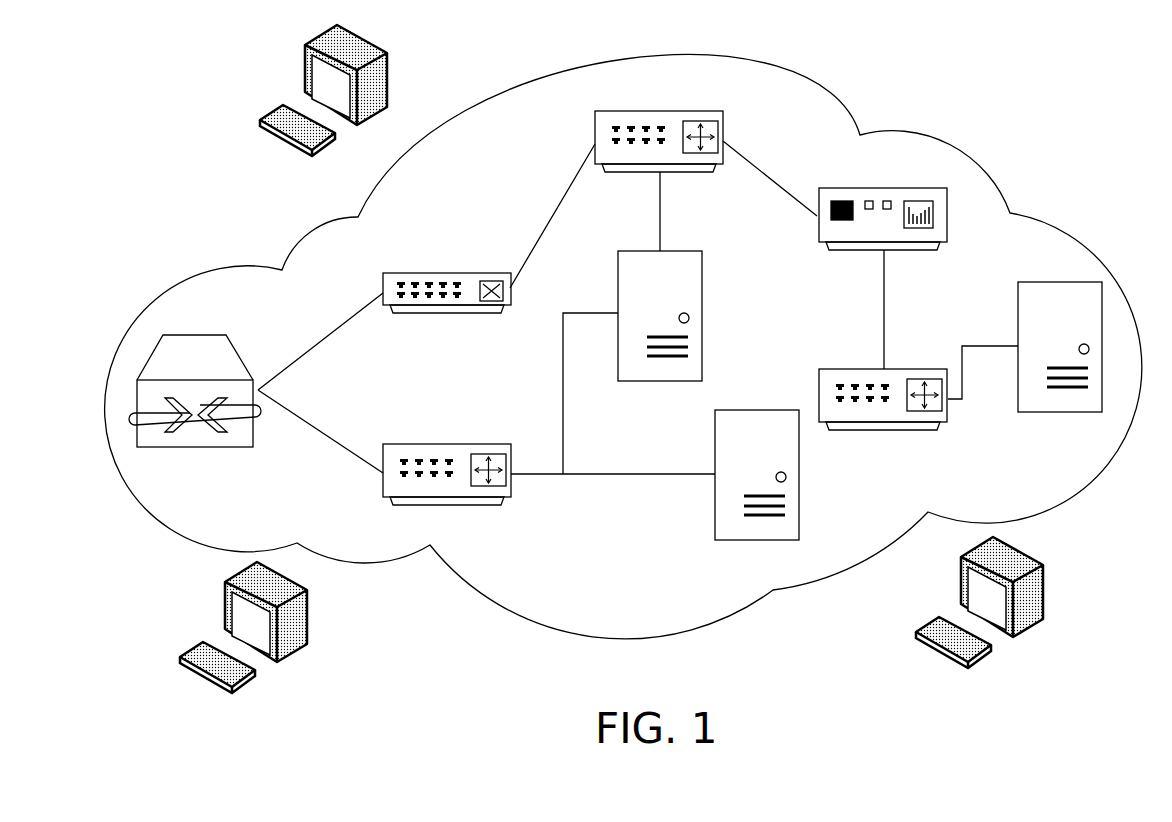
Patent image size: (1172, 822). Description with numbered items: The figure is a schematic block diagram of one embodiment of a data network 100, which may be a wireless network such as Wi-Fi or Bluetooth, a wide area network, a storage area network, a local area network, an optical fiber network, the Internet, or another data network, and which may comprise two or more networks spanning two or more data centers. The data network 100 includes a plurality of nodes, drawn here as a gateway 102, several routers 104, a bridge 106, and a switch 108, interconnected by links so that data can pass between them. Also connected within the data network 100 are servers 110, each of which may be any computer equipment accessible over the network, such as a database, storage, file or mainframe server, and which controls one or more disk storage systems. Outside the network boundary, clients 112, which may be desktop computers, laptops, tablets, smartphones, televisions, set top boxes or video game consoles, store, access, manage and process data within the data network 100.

The data network 100 is at (623, 347).
The gateway 102 is at (195, 400).
The router 104 is at (665, 320).
The bridge 106 is at (883, 230).
The switch 108 is at (447, 304).
The server 110 is at (860, 406).
The client 112 is at (611, 371).